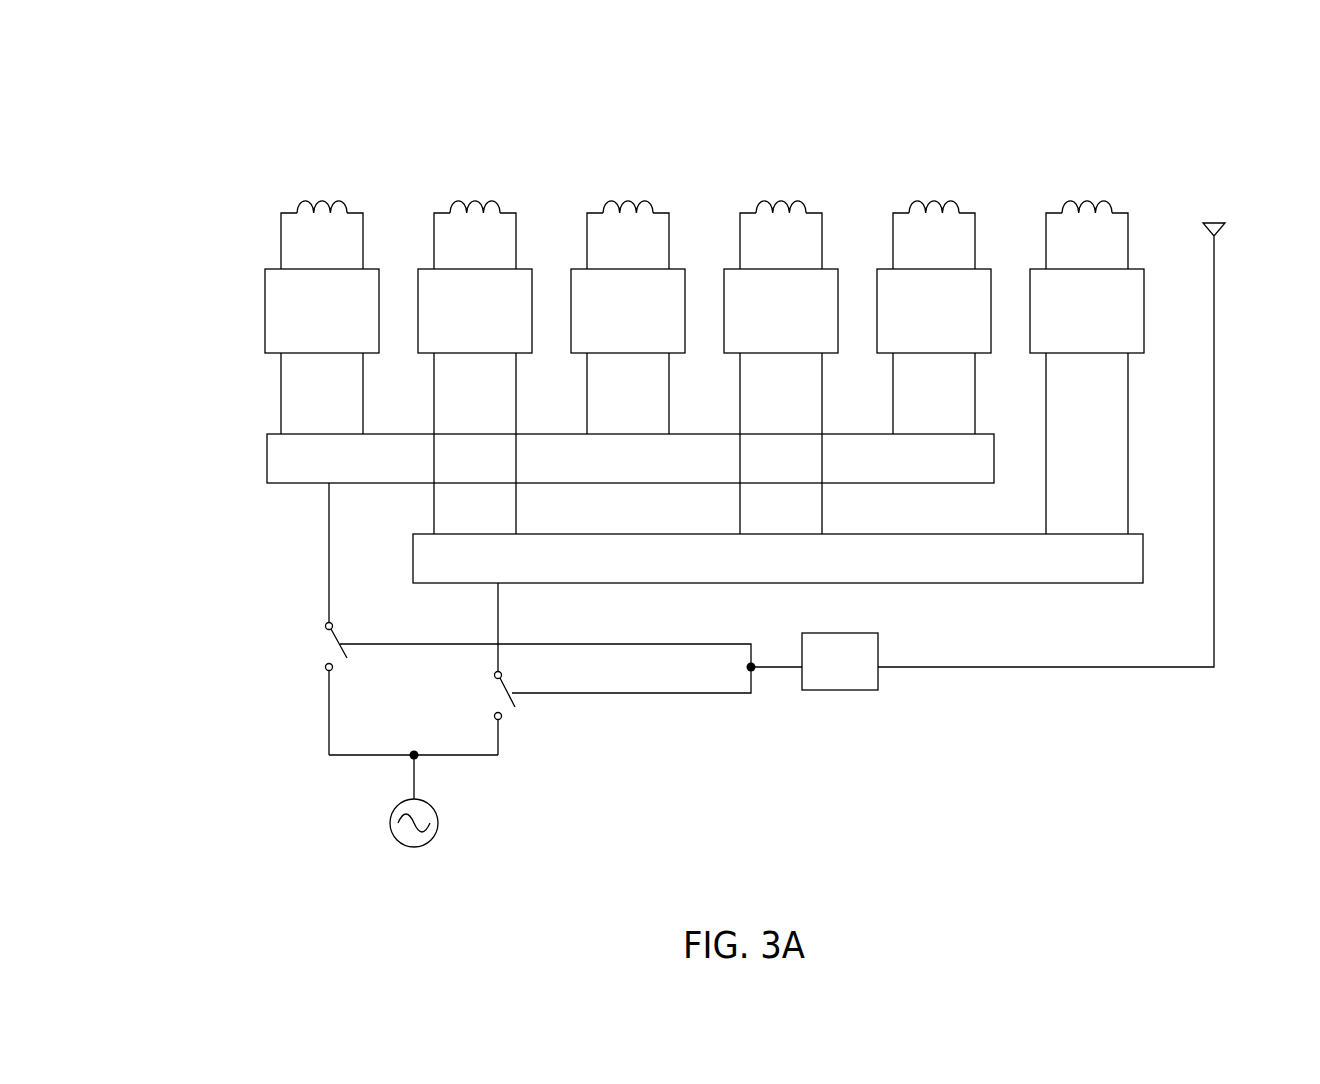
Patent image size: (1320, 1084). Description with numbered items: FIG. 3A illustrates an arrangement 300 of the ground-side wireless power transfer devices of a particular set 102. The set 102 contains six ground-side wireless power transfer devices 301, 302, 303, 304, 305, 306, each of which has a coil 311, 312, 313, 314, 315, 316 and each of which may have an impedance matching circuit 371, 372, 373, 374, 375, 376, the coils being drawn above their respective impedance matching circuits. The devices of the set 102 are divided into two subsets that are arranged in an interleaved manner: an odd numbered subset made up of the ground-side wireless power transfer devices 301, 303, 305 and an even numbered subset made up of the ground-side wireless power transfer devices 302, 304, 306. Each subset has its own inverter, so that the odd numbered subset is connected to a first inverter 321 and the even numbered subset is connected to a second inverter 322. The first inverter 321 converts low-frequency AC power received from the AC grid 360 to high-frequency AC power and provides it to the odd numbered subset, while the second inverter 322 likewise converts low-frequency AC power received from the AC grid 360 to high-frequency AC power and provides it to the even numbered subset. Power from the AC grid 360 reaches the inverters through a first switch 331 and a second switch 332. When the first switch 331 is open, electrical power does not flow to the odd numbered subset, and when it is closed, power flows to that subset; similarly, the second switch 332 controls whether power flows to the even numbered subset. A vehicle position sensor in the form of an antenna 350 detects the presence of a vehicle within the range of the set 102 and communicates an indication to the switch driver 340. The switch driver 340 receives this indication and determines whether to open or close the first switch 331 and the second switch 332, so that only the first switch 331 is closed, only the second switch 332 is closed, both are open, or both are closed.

The arrangement 300 is at (167, 146).
The set 102 is at (1140, 120).
The ground-side wireless power transfer device 301 is at (315, 182).
The ground-side wireless power transfer device 302 is at (468, 182).
The ground-side wireless power transfer device 303 is at (621, 182).
The ground-side wireless power transfer device 304 is at (774, 182).
The ground-side wireless power transfer device 305 is at (927, 182).
The ground-side wireless power transfer device 306 is at (1080, 182).
The coil 311 is at (281, 231).
The coil 312 is at (434, 231).
The coil 313 is at (587, 231).
The coil 314 is at (740, 231).
The coil 315 is at (893, 231).
The coil 316 is at (1046, 231).
The impedance matching circuit 371 is at (266, 309).
The impedance matching circuit 372 is at (418, 340).
The impedance matching circuit 373 is at (571, 340).
The impedance matching circuit 374 is at (724, 340).
The impedance matching circuit 375 is at (877, 340).
The impedance matching circuit 376 is at (1030, 340).
The first inverter 321 is at (267, 462).
The second inverter 322 is at (413, 560).
The first switch 331 is at (230, 678).
The second switch 332 is at (604, 762).
The switch driver 340 is at (849, 691).
The antenna 350 is at (1236, 216).
The AC grid 360 is at (414, 856).